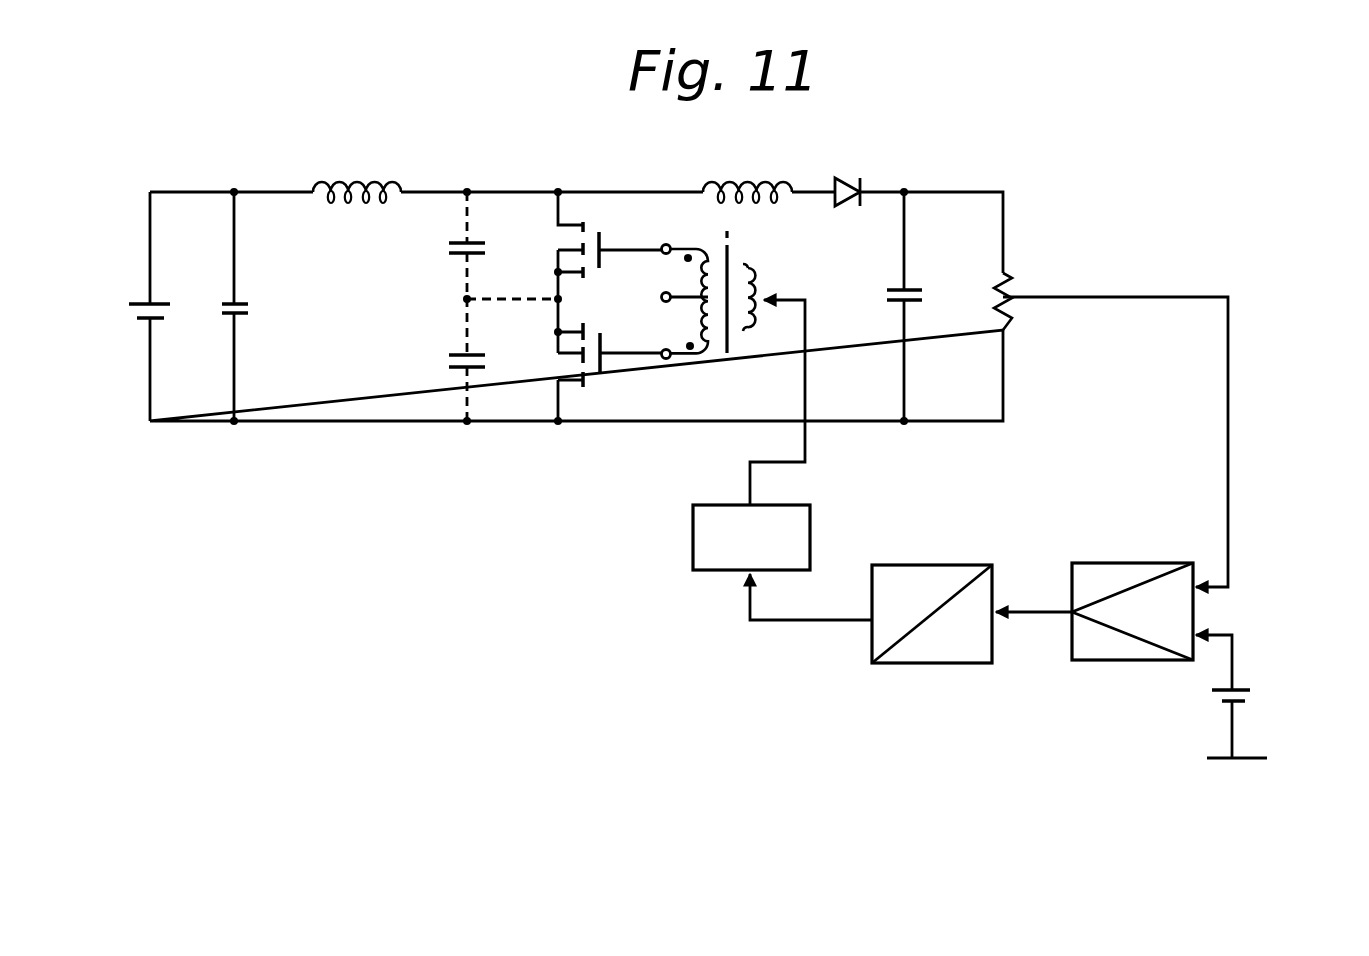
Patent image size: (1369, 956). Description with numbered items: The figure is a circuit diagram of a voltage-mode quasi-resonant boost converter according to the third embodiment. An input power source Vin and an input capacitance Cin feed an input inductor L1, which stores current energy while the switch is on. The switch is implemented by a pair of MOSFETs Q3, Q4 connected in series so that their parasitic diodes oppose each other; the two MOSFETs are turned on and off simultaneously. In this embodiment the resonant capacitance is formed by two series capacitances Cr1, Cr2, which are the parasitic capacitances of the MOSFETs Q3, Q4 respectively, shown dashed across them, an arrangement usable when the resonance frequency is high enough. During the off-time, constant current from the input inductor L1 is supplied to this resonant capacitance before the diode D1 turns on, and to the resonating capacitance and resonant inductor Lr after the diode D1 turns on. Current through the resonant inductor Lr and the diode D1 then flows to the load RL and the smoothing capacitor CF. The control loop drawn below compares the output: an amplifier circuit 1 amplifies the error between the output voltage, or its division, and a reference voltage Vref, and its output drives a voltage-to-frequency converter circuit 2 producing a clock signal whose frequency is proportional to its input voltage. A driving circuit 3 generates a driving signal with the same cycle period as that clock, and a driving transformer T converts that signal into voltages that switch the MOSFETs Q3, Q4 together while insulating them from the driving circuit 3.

The amplifier circuit 1 is at (1130, 562).
The Voltage to Frequency (V/F) converter circuit 2 is at (935, 563).
The driving circuit 3 is at (690, 538).
The input power source Vin is at (140, 312).
The input capacitance Cin is at (250, 310).
The input inductor L1 is at (358, 182).
The series capacitance (parasitic capacitance of MOSFET Q3) Cr1 is at (447, 247).
The series capacitance (parasitic capacitance of MOSFET Q4) Cr2 is at (448, 361).
The MOSFET Q3 is at (607, 231).
The MOSFET Q4 is at (606, 370).
The driving transformer T is at (709, 281).
The resonant inductor Lr is at (750, 180).
The diode D1 is at (848, 176).
The smoothing capacitor CF is at (886, 294).
The load RL is at (994, 288).
The reference voltage Vref is at (1252, 696).